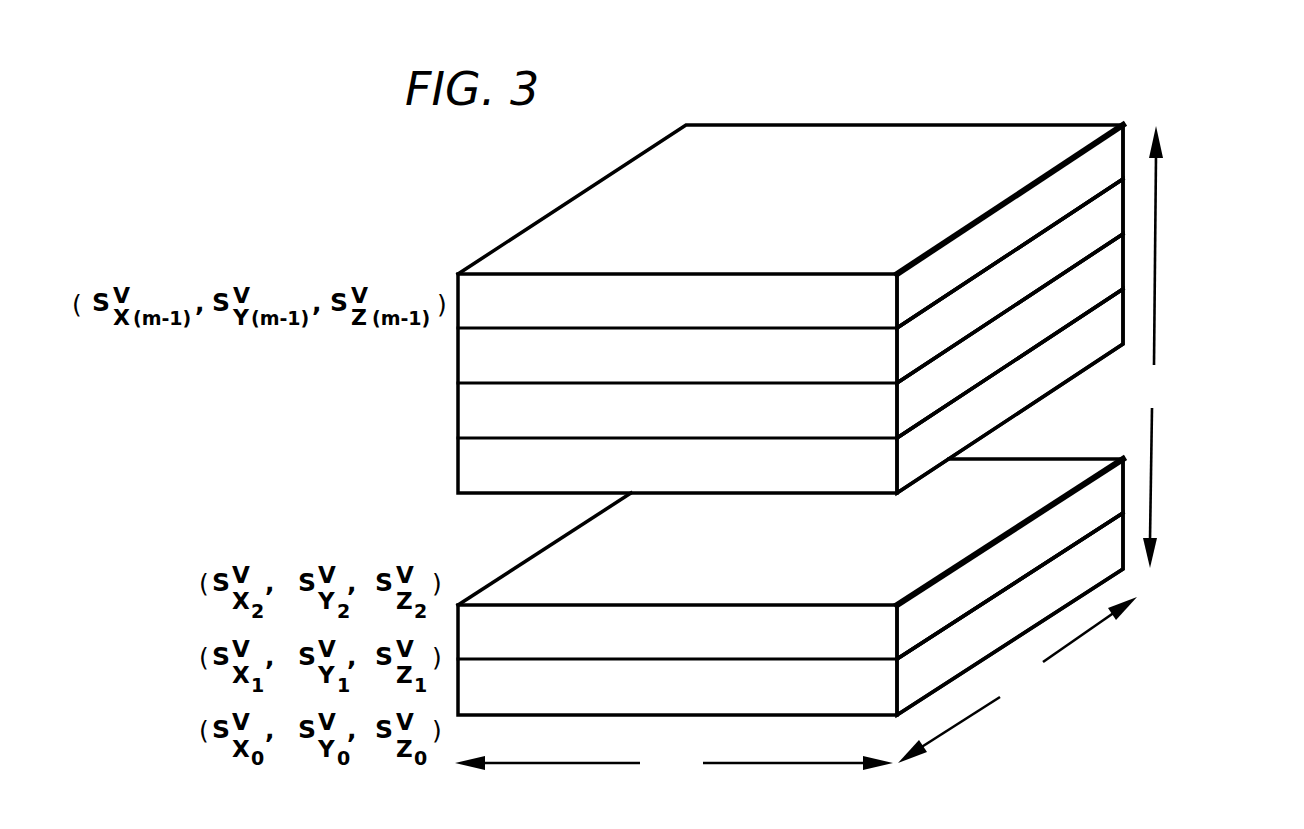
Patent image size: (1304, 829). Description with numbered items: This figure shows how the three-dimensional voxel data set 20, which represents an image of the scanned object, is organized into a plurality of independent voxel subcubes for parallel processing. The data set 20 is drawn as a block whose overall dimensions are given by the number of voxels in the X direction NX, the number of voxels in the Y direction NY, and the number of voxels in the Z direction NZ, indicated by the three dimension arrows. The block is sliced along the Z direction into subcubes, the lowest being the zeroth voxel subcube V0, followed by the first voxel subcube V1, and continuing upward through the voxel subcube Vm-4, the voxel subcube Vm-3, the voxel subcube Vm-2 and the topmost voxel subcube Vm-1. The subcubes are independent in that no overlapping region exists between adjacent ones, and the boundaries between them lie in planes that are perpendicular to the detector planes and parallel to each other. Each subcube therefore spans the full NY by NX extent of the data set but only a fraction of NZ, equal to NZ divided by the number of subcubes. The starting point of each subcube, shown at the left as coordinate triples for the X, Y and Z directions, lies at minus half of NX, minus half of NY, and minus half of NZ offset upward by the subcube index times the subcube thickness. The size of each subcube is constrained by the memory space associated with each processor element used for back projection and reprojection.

The 3D voxel data set 20 is at (961, 126).
The voxel subcube m-1 Vm-1 is at (1112, 172).
The voxel subcube m-2 Vm-2 is at (1112, 221).
The voxel subcube m-3 Vm-3 is at (1112, 274).
The voxel subcube m-4 Vm-4 is at (1112, 323).
The voxel subcube 1 V1 is at (1100, 500).
The voxel subcube 0 V0 is at (1100, 548).
The voxel count in X direction NX is at (1017, 680).
The voxel count in Y direction NY is at (674, 764).
The voxel count in Z direction NZ is at (1160, 347).